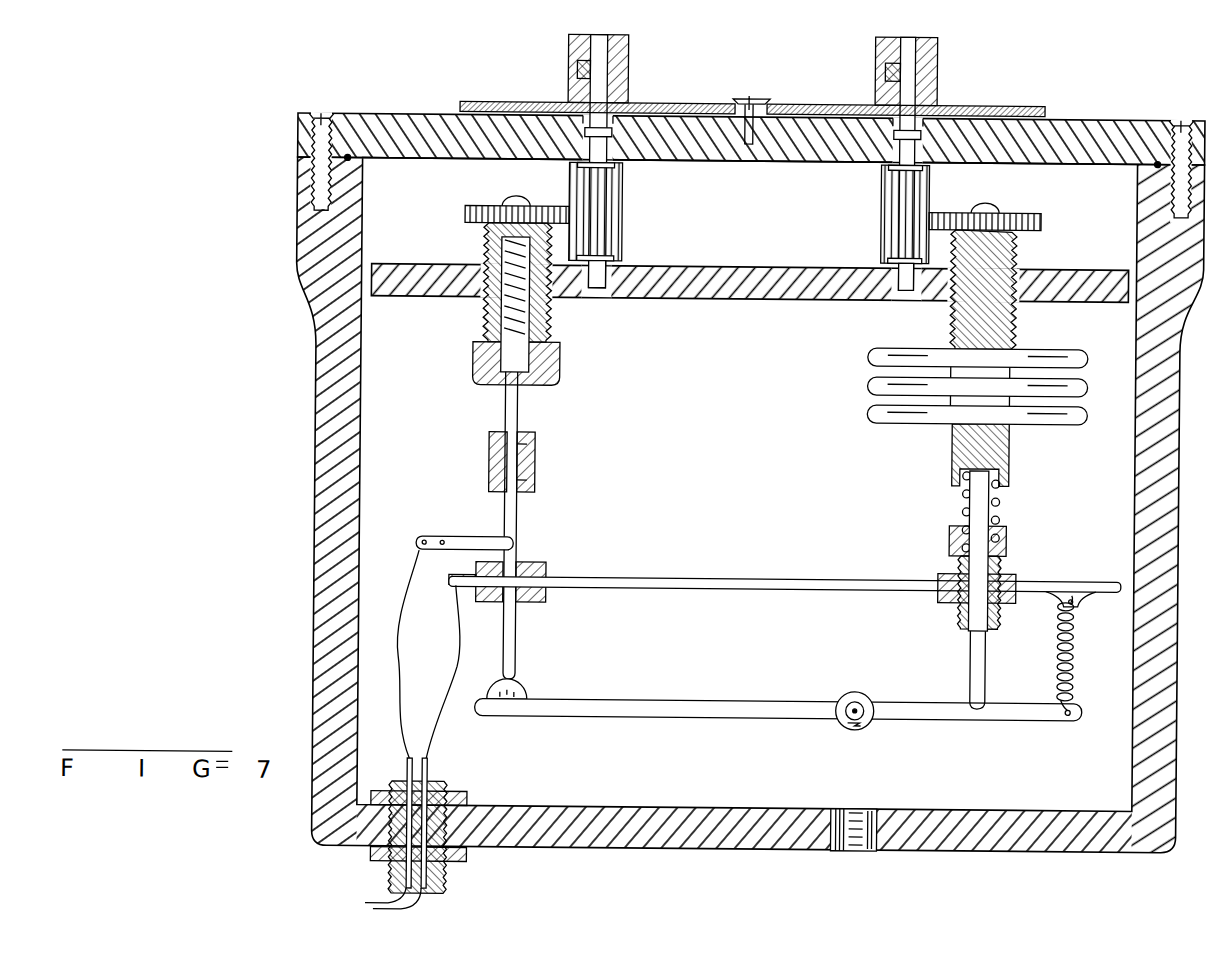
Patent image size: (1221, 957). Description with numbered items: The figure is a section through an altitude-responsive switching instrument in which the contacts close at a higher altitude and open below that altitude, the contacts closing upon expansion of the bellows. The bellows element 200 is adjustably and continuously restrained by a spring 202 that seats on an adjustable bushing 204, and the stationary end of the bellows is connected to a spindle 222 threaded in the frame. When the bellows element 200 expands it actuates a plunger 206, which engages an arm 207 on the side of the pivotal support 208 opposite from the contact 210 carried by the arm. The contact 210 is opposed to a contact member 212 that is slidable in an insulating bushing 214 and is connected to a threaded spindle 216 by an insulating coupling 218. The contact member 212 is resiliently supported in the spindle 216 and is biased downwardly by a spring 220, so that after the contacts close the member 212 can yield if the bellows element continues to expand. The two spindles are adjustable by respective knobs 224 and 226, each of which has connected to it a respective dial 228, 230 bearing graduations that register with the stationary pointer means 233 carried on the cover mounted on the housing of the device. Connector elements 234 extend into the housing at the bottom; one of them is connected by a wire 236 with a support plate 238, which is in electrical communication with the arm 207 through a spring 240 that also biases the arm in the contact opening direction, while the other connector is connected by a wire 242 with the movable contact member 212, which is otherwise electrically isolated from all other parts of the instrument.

The bellows element 200 is at (870, 384).
The spring 202 is at (1003, 512).
The adjustable bushing 204 is at (953, 540).
The plunger 206 is at (975, 660).
The arm 207 is at (790, 697).
The pivotal support 208 is at (862, 697).
The contact 210 is at (528, 688).
The contact member 212 is at (521, 640).
The insulating bushing 214 is at (538, 560).
The threaded spindle 216 is at (553, 318).
The insulating coupling 218 is at (539, 460).
The spring 220 is at (505, 322).
The spindle 222 is at (952, 322).
The knob 224 is at (628, 60).
The knob 226 is at (937, 56).
The dial 228 is at (640, 100).
The dial 230 is at (990, 100).
The stationary pointer means 233 is at (752, 93).
The connector elements 234 is at (405, 885).
The wire 236 is at (440, 716).
The support plate 238 is at (598, 575).
The spring 240 is at (1062, 640).
The wire 242 is at (406, 640).